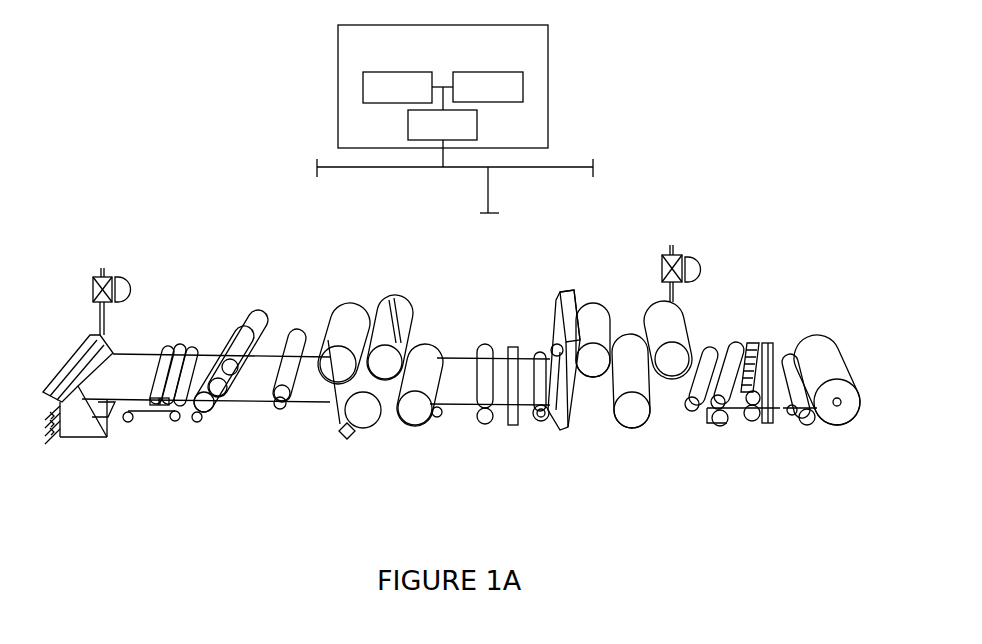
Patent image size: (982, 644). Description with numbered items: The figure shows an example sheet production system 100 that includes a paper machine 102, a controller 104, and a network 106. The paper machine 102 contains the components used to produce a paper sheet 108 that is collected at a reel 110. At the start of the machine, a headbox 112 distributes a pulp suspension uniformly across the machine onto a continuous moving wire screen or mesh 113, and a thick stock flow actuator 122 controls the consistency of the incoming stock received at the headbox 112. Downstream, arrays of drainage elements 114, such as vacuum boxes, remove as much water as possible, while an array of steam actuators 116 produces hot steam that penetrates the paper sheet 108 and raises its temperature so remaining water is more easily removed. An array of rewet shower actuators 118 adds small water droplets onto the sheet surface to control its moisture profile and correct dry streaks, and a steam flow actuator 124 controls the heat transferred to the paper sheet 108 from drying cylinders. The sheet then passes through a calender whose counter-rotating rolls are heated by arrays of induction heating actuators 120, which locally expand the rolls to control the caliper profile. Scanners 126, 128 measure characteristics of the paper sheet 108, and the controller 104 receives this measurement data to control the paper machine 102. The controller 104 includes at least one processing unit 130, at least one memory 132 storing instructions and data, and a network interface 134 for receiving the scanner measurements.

The sheet production system 100 is at (585, 506).
The paper machine 102 is at (263, 265).
The controller 104 is at (548, 118).
The network 106 is at (372, 170).
The paper sheet 108 is at (257, 398).
The reel 110 is at (845, 428).
The headbox 112 is at (67, 360).
The wire screen or mesh 113 is at (137, 419).
The drainage elements 114 is at (226, 407).
The steam actuators 116 is at (348, 443).
The rewet shower actuators 118 is at (563, 288).
The induction heating actuators 120 is at (763, 411).
The thick stock flow actuator 122 is at (118, 268).
The steam flow actuator 124 is at (682, 252).
The scanner 126 is at (517, 428).
The scanner 128 is at (760, 342).
The processing unit 130 is at (397, 87).
The memory 132 is at (488, 87).
The network interface 134 is at (442, 125).